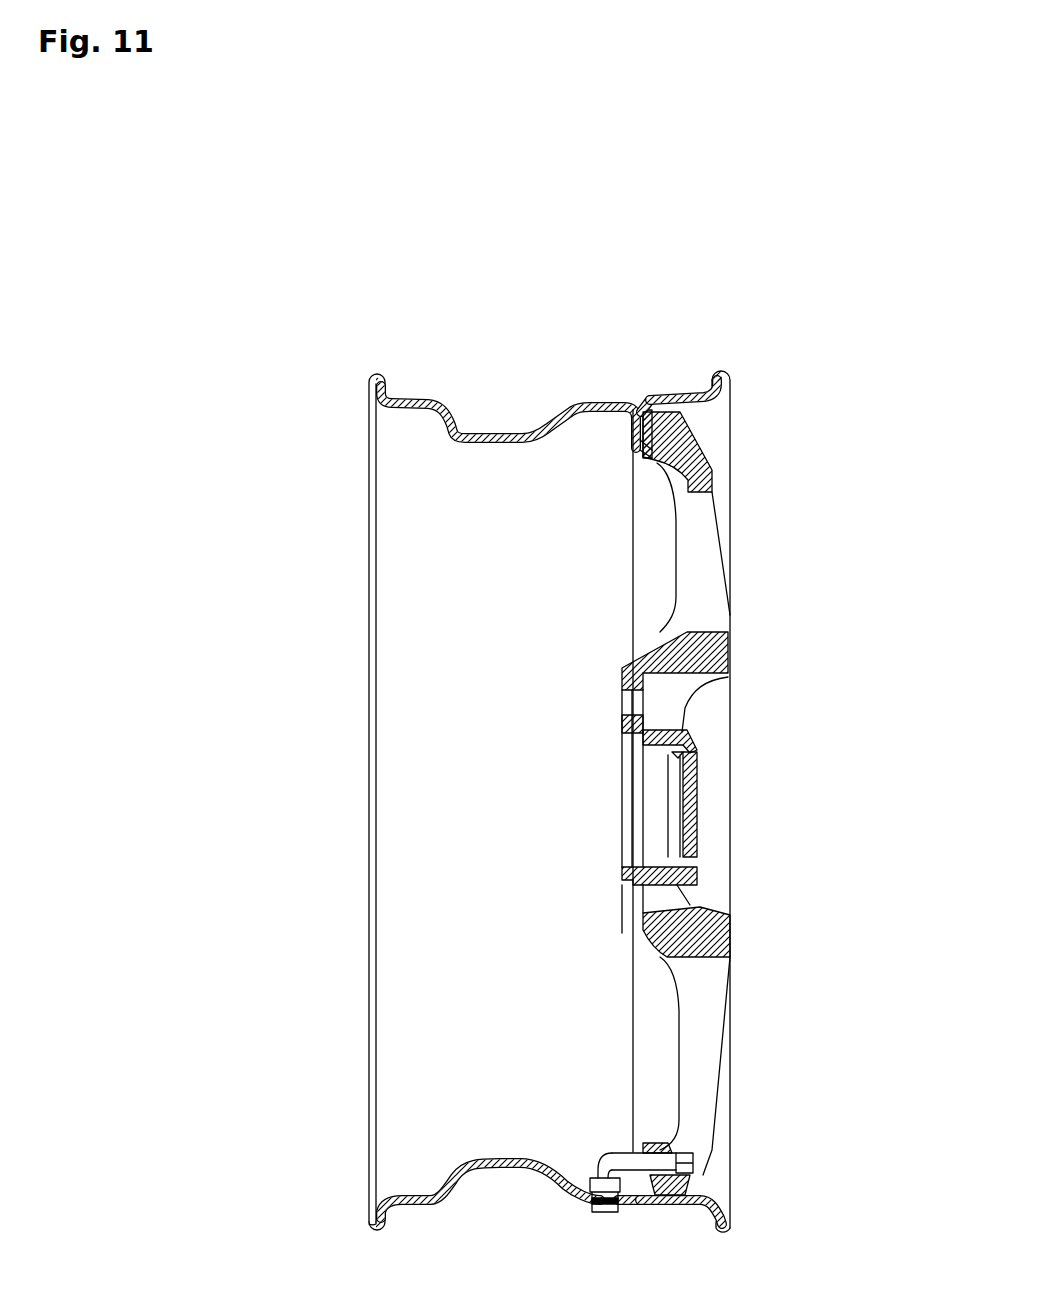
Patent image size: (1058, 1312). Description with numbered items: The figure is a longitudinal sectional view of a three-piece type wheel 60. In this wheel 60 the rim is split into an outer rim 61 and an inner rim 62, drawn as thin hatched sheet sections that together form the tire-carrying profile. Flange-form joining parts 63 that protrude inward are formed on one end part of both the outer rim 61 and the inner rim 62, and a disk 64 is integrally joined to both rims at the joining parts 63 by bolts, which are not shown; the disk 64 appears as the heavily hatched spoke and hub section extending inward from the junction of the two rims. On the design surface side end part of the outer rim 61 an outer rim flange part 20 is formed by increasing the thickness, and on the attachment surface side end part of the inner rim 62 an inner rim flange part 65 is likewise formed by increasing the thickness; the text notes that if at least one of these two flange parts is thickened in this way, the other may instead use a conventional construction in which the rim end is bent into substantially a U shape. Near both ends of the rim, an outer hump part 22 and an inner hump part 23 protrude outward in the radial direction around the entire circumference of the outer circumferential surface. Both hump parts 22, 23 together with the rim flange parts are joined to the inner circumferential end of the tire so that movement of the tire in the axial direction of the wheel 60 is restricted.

The wheel 60 is at (697, 276).
The outer rim flange part 20 is at (732, 381).
The outer hump part 22 is at (673, 395).
The inner hump part 23 is at (437, 398).
The outer rim 61 is at (652, 388).
The inner rim 62 is at (494, 406).
The joining parts 63 is at (640, 440).
The disk 64 is at (735, 506).
The inner rim flange part 65 is at (378, 368).